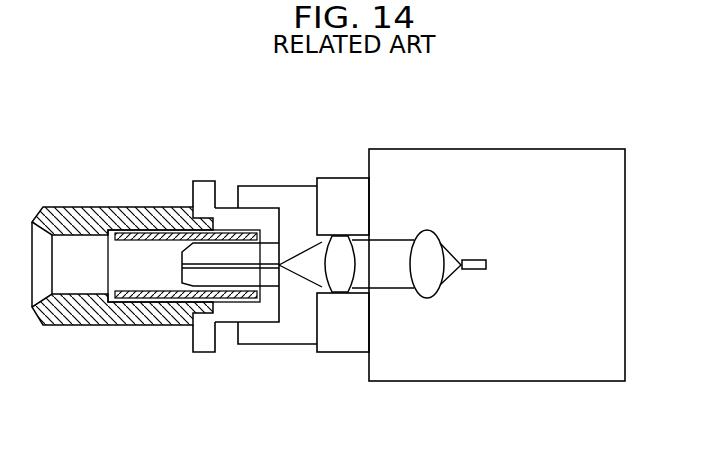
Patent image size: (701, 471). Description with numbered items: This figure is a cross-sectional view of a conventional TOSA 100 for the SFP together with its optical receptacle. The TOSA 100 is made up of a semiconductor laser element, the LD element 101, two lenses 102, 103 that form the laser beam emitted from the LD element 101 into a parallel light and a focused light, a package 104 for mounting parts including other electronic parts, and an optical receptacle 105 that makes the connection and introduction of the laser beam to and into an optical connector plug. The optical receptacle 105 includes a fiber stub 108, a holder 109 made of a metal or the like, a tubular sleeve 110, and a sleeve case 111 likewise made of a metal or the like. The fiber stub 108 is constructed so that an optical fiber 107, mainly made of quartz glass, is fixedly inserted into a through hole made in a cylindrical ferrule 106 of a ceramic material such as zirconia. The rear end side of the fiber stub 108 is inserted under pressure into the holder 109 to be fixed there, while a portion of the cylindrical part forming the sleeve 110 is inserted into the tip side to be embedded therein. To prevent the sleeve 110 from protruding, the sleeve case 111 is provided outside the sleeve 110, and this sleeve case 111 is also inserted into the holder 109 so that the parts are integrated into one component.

The TOSA 100 is at (300, 153).
The semiconductor laser element 101 is at (475, 269).
The lens 102 is at (425, 272).
The lens 103 is at (342, 272).
The package 104 is at (552, 381).
The optical receptacle 105 is at (155, 267).
The ferrule 106 is at (248, 280).
The optical fiber 107 is at (210, 270).
The fiber stub 108 is at (178, 252).
The holder 109 is at (226, 218).
The sleeve 110 is at (140, 296).
The sleeve case 111 is at (93, 313).